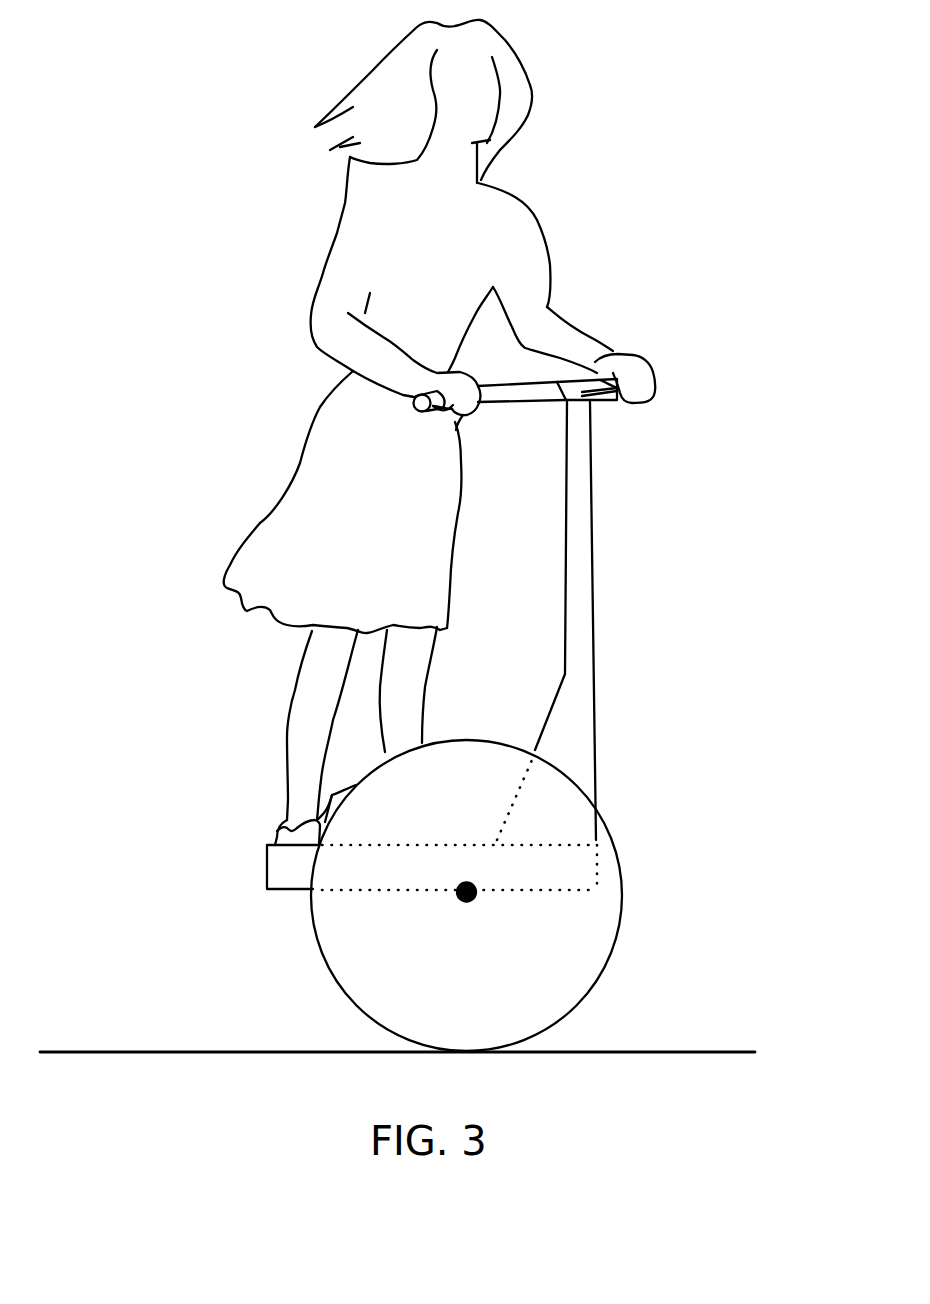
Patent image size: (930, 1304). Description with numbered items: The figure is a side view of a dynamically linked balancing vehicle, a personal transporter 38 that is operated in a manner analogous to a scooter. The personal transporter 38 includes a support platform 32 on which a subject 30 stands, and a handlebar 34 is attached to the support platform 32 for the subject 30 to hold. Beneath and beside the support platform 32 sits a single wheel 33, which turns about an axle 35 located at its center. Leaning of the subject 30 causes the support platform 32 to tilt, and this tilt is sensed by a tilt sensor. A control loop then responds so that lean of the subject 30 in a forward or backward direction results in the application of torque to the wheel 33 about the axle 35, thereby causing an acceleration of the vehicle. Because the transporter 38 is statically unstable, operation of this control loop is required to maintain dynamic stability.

The subject 30 is at (344, 200).
The support platform 32 is at (267, 875).
The wheel 33 is at (621, 944).
The handlebar 34 is at (611, 401).
The axle 35 is at (467, 903).
The personal transporter 38 is at (768, 641).